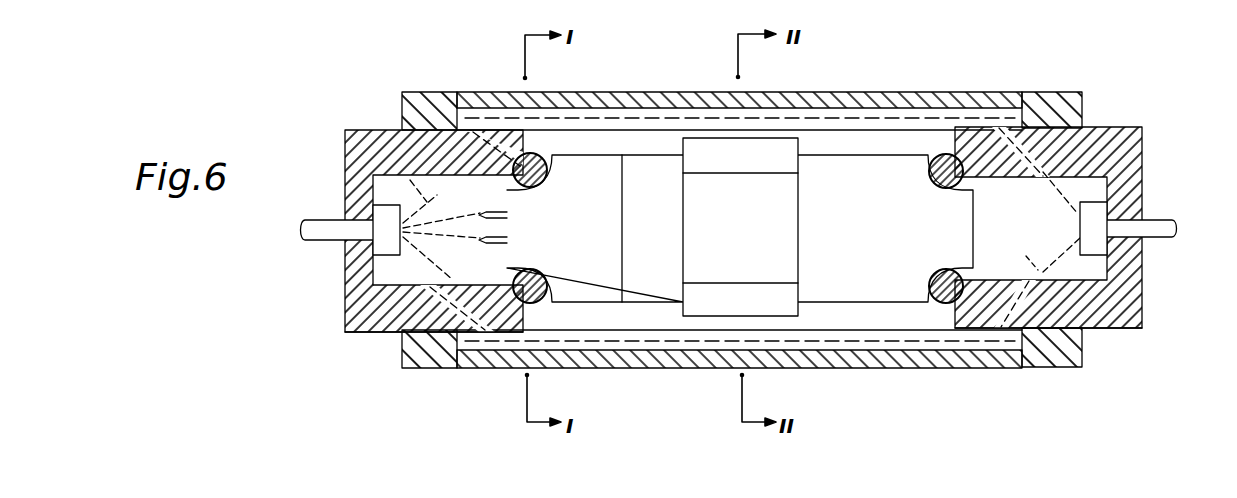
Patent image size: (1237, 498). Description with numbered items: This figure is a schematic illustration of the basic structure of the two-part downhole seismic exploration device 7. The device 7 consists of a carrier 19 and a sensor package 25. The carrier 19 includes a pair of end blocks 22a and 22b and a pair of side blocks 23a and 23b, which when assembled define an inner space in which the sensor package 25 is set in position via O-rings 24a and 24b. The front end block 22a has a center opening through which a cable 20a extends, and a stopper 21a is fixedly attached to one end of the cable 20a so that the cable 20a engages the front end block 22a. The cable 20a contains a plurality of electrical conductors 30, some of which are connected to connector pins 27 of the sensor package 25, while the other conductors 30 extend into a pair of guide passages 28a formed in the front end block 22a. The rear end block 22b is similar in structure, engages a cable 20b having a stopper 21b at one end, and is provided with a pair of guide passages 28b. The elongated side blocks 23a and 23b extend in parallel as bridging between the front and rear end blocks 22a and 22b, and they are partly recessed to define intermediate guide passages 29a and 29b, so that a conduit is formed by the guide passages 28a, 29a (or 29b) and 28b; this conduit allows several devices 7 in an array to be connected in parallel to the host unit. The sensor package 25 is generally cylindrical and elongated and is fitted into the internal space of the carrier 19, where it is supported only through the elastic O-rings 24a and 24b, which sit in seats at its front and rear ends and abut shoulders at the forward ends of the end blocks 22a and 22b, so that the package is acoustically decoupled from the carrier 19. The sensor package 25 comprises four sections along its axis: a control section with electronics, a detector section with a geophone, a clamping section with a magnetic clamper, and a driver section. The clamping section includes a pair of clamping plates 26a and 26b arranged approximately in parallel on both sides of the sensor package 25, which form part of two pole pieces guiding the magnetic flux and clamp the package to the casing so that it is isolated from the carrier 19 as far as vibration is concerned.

The downhole seismic exploration device 7 is at (1100, 89).
The carrier 19 is at (1018, 90).
The cable 20a is at (318, 243).
The cable 20b is at (1163, 240).
The stopper 21a is at (346, 176).
The stopper 21b is at (1142, 170).
The front end block 22a is at (360, 334).
The rear end block 22b is at (1109, 330).
The side block 23a is at (428, 92).
The side block 23b is at (440, 368).
The O-ring 24a is at (545, 303).
The O-ring 24b is at (935, 304).
The sensor package 25 is at (885, 314).
The clamping plate 26a is at (710, 148).
The clamping plate 26b is at (708, 312).
The connector pins 27 is at (496, 250).
The guide passages 28a is at (420, 195).
The guide passages 28b is at (1006, 168).
The intermediate guide passage 29a is at (884, 110).
The intermediate guide passage 29b is at (846, 344).
The electrical conductors 30 is at (378, 130).